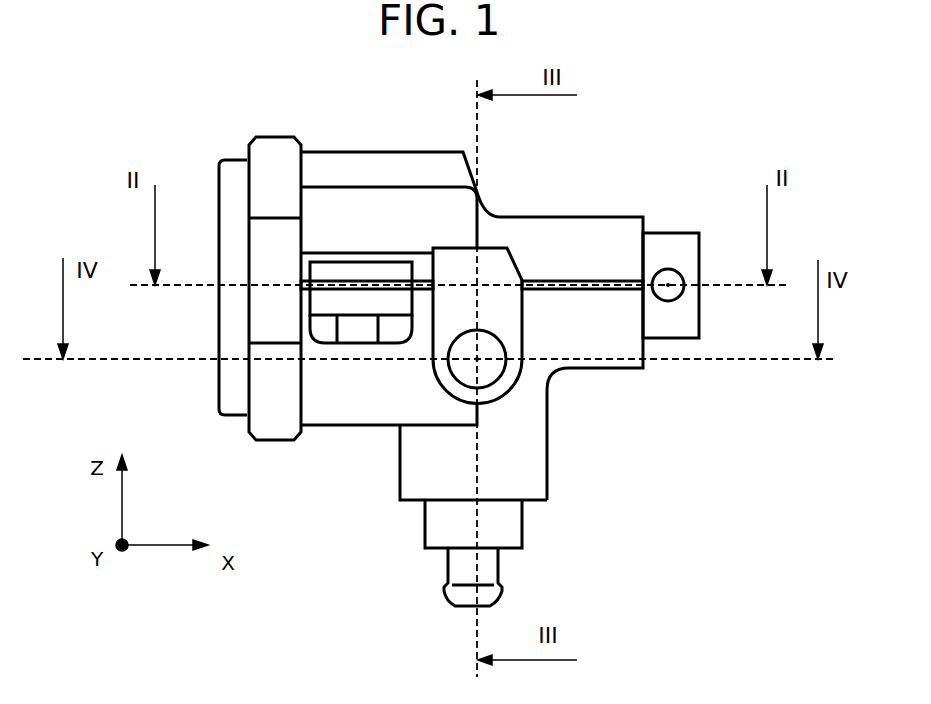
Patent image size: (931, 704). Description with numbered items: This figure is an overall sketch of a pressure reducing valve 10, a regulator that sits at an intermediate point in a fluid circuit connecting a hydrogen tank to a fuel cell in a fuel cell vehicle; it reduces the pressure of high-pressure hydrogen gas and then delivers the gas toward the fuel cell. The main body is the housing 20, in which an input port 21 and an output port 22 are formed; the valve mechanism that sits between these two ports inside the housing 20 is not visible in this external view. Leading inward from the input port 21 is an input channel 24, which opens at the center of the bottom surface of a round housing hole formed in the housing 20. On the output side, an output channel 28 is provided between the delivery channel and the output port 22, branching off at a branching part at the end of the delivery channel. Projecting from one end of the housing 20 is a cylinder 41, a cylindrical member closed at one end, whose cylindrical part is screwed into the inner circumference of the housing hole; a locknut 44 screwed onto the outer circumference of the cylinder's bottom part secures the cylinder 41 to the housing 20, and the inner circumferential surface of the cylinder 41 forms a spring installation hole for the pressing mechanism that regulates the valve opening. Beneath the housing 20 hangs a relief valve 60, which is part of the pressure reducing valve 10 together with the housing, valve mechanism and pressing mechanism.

The pressure reducing valve 10 is at (604, 158).
The housing 20 is at (347, 162).
The input port 21 is at (668, 285).
The output port 22 is at (477, 359).
The input channel 24 is at (678, 298).
The output channel 28 is at (490, 377).
The cylinder 41 is at (227, 203).
The locknut 44 is at (277, 150).
The relief valve 60 is at (513, 532).